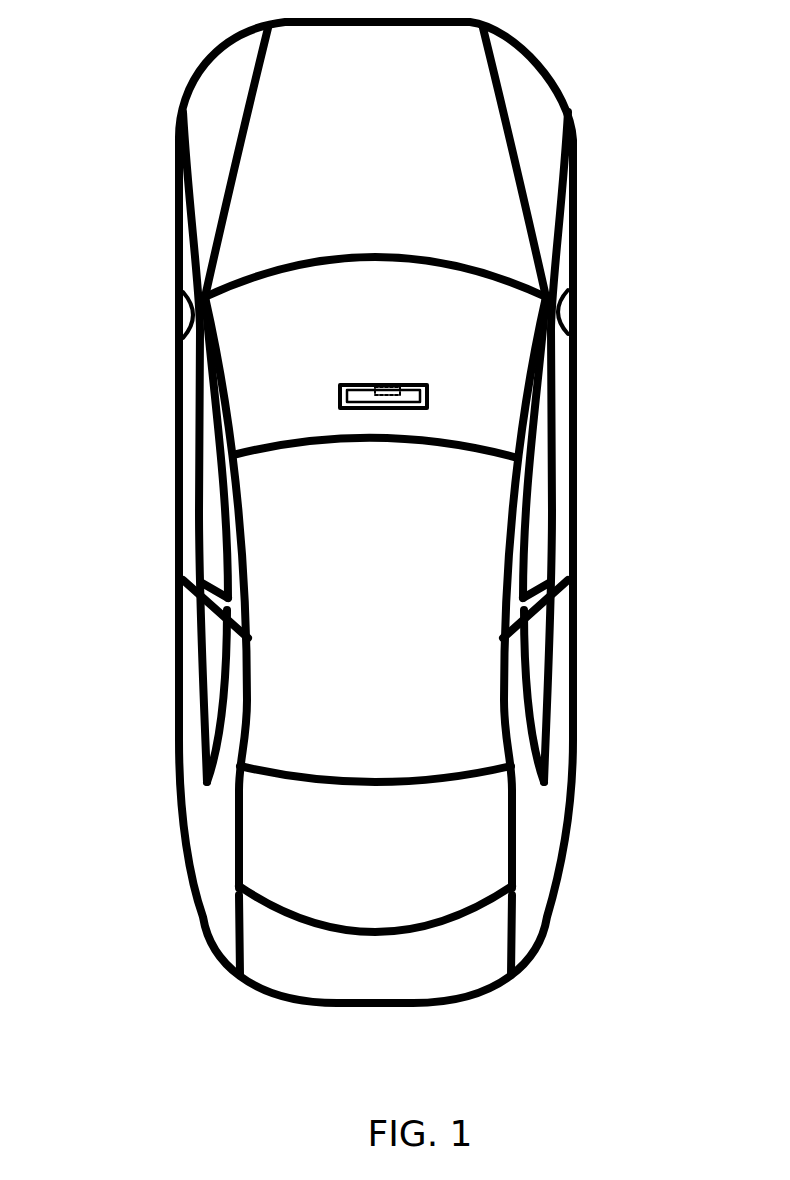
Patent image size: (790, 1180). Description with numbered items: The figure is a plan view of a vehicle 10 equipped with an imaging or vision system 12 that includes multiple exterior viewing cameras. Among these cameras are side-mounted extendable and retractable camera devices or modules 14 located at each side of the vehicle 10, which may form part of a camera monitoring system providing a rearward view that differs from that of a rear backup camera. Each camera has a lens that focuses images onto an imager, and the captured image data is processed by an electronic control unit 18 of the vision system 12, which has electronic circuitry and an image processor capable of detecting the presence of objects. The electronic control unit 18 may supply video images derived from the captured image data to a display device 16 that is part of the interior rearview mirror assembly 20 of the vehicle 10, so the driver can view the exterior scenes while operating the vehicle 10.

The vehicle 10 is at (562, 96).
The vision system 12 is at (415, 356).
The side-mounted camera device 14 is at (177, 322).
The display device 16 is at (357, 387).
The electronic control unit 18 is at (378, 383).
The interior rearview mirror assembly 20 is at (425, 385).